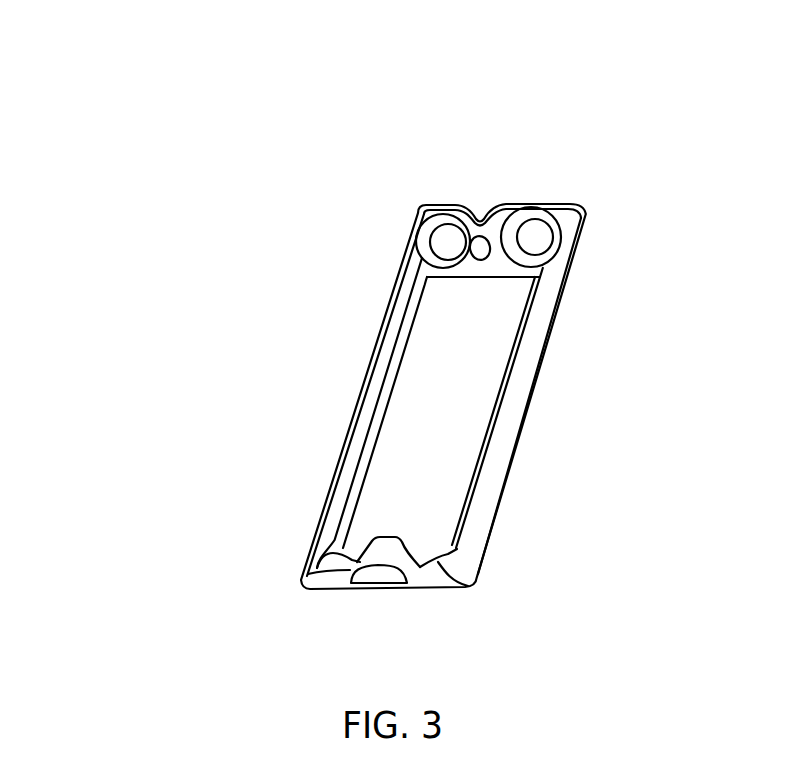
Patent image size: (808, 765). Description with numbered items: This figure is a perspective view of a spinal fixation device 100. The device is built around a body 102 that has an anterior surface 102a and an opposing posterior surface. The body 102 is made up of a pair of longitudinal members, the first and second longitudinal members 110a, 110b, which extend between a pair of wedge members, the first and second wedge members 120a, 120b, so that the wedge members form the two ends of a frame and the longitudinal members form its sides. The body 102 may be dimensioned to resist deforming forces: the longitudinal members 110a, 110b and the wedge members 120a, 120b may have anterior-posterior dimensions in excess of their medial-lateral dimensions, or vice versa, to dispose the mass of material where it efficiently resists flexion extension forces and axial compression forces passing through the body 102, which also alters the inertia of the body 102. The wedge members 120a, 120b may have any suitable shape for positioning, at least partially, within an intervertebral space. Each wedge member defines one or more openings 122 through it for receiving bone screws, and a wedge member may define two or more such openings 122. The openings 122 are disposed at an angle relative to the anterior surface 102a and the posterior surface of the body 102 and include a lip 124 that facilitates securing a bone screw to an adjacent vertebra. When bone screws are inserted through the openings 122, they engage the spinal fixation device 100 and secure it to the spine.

The spinal fixation device 100 is at (783, 66).
The body 102 is at (512, 445).
The anterior surface 102a is at (480, 215).
The first longitudinal member 110a is at (533, 372).
The second longitudinal member 110b is at (370, 382).
The first wedge member 120a is at (577, 237).
The second wedge member 120b is at (472, 560).
The opening 122 is at (441, 229).
The lip 124 is at (537, 213).